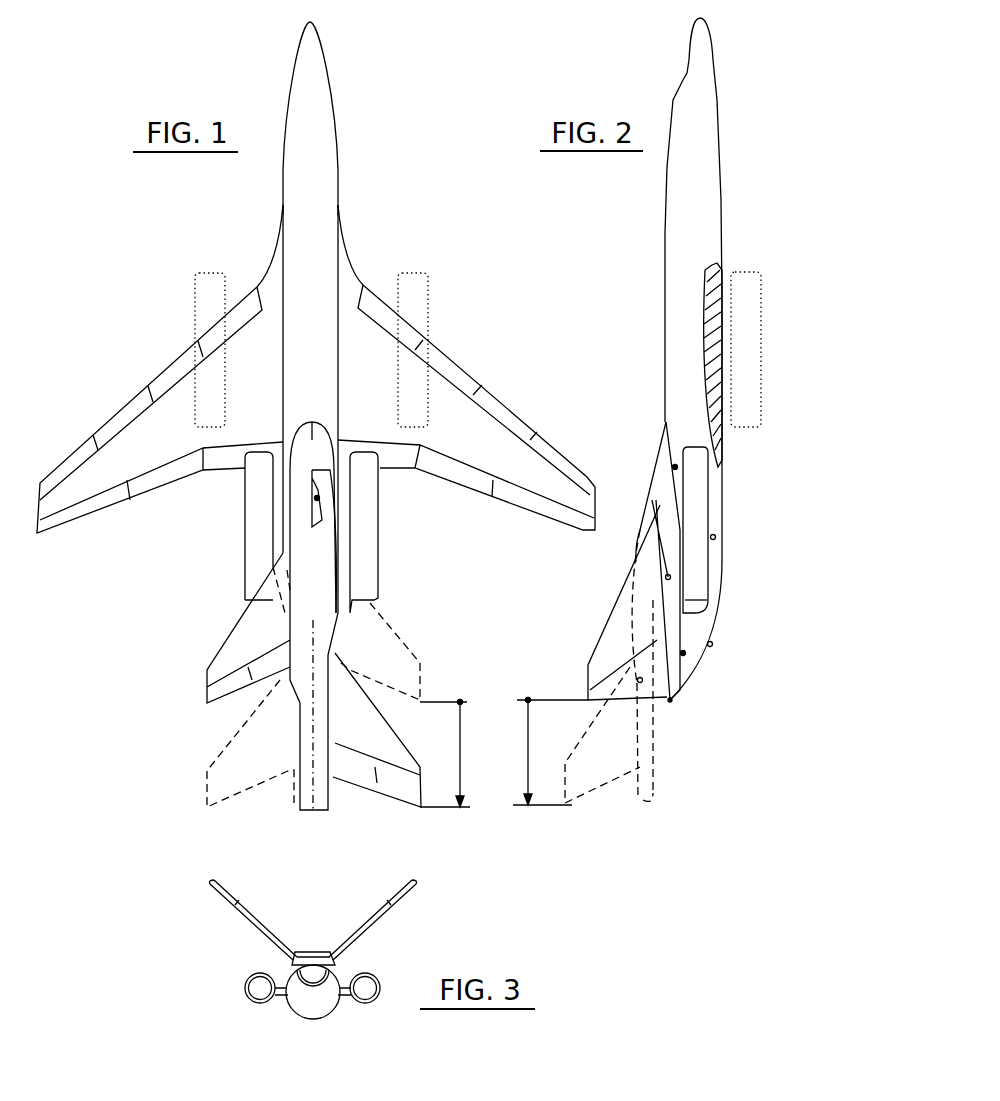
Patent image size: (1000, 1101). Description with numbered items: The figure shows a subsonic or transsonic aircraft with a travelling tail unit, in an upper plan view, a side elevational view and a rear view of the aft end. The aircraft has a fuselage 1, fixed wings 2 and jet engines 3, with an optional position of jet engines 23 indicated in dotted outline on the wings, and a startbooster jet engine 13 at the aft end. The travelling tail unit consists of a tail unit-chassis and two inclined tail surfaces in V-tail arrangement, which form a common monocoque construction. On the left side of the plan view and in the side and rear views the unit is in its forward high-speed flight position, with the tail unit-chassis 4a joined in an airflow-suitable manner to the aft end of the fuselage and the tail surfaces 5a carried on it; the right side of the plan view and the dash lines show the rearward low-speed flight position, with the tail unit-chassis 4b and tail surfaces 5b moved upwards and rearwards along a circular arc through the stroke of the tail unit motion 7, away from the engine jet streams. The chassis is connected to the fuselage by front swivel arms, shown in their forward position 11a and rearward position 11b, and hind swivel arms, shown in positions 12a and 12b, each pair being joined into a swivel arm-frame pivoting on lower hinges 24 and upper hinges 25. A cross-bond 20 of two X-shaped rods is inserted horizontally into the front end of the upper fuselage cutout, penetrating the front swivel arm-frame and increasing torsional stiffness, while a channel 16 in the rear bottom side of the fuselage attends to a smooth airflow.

In FIG. 1, the fuselage 1 is at (298, 200).
In FIG. 2, the fuselage 1 is at (677, 245).
In FIG. 3, the fuselage 1 is at (322, 1000).
In FIG. 1, the fixed wings 2 is at (183, 393).
In FIG. 2, the fixed wings 2 is at (712, 323).
In FIG. 1, the jet engines 3 is at (255, 535).
In FIG. 1, the tail unit-chassis in its forward high-speed flight position 4a is at (305, 455).
In FIG. 2, the tail unit-chassis in its forward high-speed flight position 4a is at (660, 518).
In FIG. 3, the tail unit-chassis in its forward high-speed flight position 4a is at (313, 957).
In FIG. 1, the tail unit-chassis in its rearward low-speed flight position 4b is at (328, 620).
In FIG. 2, the tail unit-chassis in its rearward low-speed flight position 4b is at (640, 585).
In FIG. 1, the two inclined tail surfaces in V-tail arrangement in their forward high-speed fli 5a is at (232, 657).
In FIG. 2, the two inclined tail surfaces in V-tail arrangement in their forward high-speed fli 5a is at (600, 667).
In FIG. 1, the two inclined tail surfaces in V-tail arrangement in their rearward low-speed fli 5b is at (390, 763).
In FIG. 2, the two inclined tail surfaces in V-tail arrangement in their rearward low-speed fli 5b is at (590, 790).
In FIG. 1, the stroke of the tail unit motion 7 is at (460, 750).
In FIG. 2, the stroke of the tail unit motion 7 is at (528, 752).
In FIG. 2, the front swivel arms in their forward high-speed flight position 11a is at (692, 503).
In FIG. 2, the front swivel arms in their rearward low-speed flight position 11b is at (700, 545).
In FIG. 2, the hind swivel arms in their forward high-speed flight position 12a is at (712, 643).
In FIG. 2, the hind swivel arms in their rearward low-speed flight position 12b is at (683, 653).
In FIG. 3, the startbooster jet engine 13 is at (309, 984).
In FIG. 2, the channel in the rear bottom side of the fuselage 16 is at (712, 583).
In FIG. 1, the cross-bond 20 is at (317, 498).
In FIG. 1, the optional position of jet engines 23 is at (430, 295).
In FIG. 2, the lower hinges of the swivel arms or of the swivel arm-frames 24 is at (715, 537).
In FIG. 2, the upper hinges of the swivel arms or of the swivel arm-frames 25 is at (640, 523).